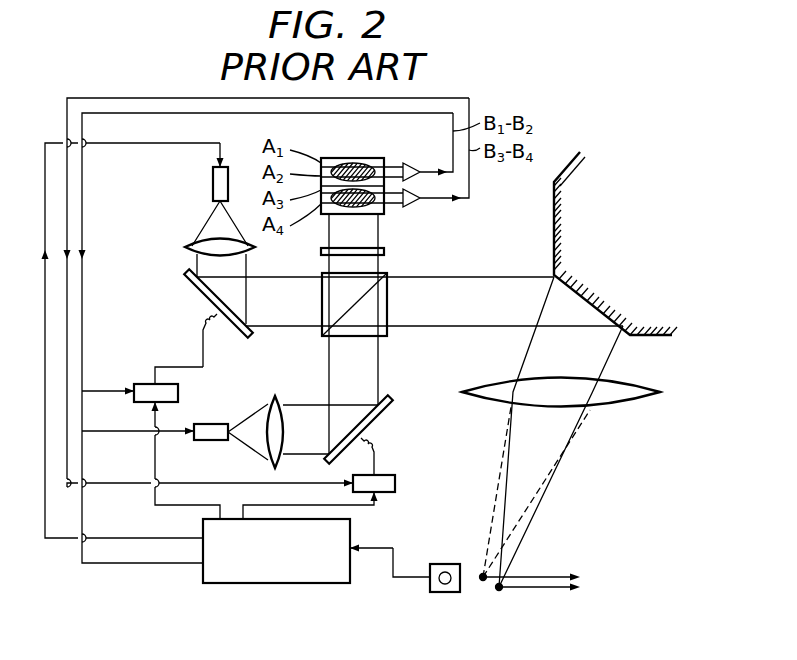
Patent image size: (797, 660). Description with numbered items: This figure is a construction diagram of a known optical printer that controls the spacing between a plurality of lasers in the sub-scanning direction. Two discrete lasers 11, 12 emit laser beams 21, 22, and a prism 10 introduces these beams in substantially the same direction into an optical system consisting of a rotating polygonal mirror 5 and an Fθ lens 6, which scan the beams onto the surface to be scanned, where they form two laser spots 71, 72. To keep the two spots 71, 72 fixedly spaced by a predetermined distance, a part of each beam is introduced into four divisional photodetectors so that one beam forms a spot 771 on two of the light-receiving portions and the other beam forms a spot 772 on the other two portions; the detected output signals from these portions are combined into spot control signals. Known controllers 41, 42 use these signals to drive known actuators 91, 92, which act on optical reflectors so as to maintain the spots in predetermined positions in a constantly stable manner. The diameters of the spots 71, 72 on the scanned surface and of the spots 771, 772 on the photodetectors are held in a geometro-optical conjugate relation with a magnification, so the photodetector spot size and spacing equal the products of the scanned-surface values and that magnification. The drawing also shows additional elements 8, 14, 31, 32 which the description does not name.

The rotating polygonal mirror 5 is at (553, 233).
The Fθ lens 6 is at (608, 412).
The sensor 8 is at (443, 564).
The prism 10 is at (322, 306).
The laser 11 is at (213, 180).
The laser 12 is at (212, 441).
The control circuit 14 is at (294, 583).
The laser beam 21 is at (208, 228).
The laser beam 22 is at (264, 440).
The galvano mirror 31 is at (186, 282).
The galvano mirror 32 is at (388, 416).
The controller 41 is at (178, 393).
The controller 42 is at (395, 484).
The laser spot 71 is at (483, 581).
The laser spot 72 is at (499, 591).
The actuator 91 is at (213, 324).
The actuator 92 is at (372, 447).
The spot 771 is at (353, 165).
The spot 772 is at (360, 207).